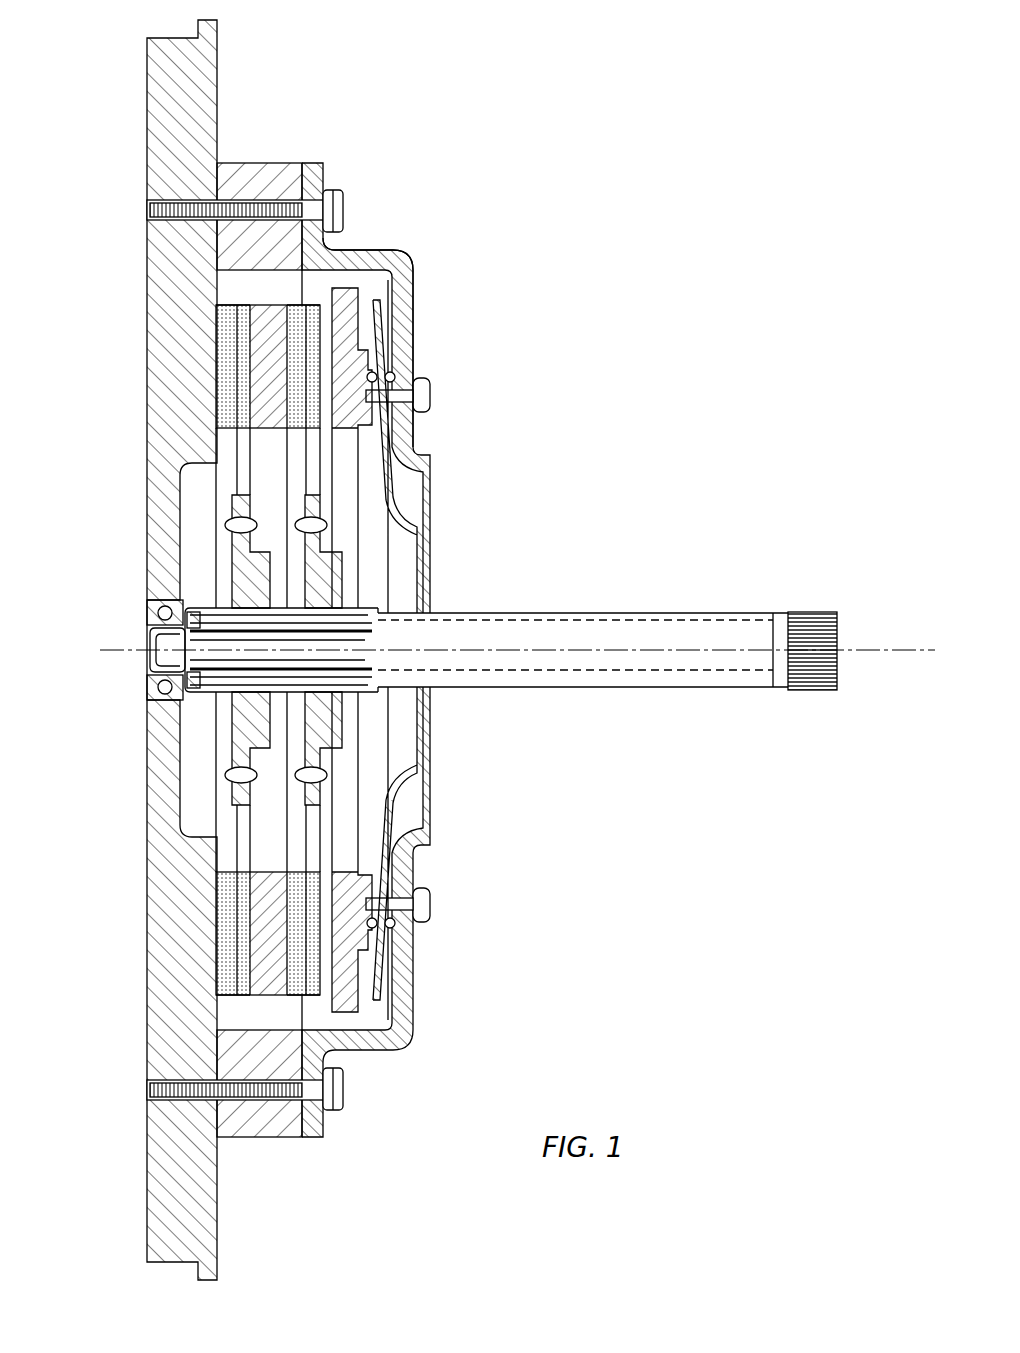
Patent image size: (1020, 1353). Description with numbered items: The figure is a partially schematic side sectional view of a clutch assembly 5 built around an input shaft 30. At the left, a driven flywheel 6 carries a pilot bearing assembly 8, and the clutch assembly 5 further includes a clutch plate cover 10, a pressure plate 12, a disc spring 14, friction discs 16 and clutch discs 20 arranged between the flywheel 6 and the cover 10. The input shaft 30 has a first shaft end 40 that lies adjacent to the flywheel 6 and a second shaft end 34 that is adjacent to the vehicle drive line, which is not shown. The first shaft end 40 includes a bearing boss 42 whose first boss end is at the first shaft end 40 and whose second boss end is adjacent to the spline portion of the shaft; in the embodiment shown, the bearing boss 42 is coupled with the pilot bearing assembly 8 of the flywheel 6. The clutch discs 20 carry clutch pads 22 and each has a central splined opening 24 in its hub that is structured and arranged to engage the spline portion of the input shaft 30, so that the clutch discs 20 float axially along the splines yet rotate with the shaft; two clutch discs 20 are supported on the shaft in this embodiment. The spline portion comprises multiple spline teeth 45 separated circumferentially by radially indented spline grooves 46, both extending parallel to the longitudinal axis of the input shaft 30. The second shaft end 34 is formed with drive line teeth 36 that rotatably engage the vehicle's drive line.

The clutch assembly 5 is at (492, 172).
The driven flywheel 6 is at (155, 262).
The pilot bearing assembly 8 is at (163, 603).
The clutch plate cover 10 is at (403, 303).
The pressure plate 12 is at (345, 326).
The disc spring 14 is at (431, 488).
The friction discs 16 is at (260, 355).
The clutch discs 20 is at (333, 577).
The clutch pads 22 is at (313, 298).
The central splined opening 24 is at (340, 618).
The input shaft 30 is at (606, 700).
The second shaft end 34 is at (837, 628).
The drive line teeth 36 is at (837, 684).
The first shaft end 40 is at (148, 655).
The bearing boss 42 is at (163, 640).
The spline teeth 45 is at (203, 677).
The spline grooves 46 is at (348, 662).